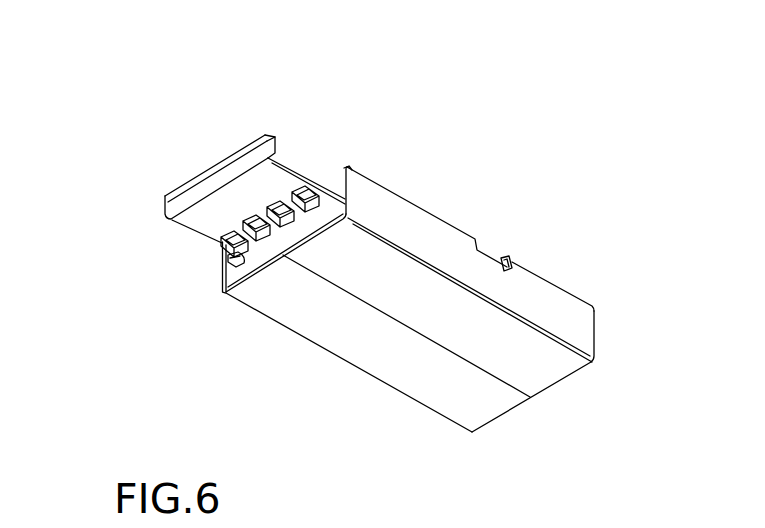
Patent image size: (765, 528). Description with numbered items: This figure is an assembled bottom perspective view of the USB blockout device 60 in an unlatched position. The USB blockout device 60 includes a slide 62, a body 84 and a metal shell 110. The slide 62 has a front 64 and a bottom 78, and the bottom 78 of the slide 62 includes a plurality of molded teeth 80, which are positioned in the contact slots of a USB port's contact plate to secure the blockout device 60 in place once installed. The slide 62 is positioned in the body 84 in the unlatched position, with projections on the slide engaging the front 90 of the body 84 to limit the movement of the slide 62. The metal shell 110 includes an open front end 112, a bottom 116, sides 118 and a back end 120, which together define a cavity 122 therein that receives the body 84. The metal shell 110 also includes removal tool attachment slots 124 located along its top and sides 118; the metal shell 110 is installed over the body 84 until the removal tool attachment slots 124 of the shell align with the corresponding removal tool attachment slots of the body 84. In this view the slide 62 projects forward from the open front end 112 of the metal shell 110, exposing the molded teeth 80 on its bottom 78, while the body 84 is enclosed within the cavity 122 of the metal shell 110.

The USB blockout device 60 is at (474, 96).
The slide 62 is at (200, 172).
The front 64 is at (182, 193).
The bottom 78 is at (250, 188).
The molded teeth 80 is at (217, 241).
The body 84 is at (330, 186).
The front 90 is at (333, 180).
The metal shell 110 is at (416, 203).
The open front end 112 is at (348, 167).
The bottom 116 is at (367, 348).
The sides 118 is at (553, 306).
The back end 120 is at (570, 377).
The cavity 122 is at (240, 270).
The removal tool attachment slots 124 is at (494, 257).